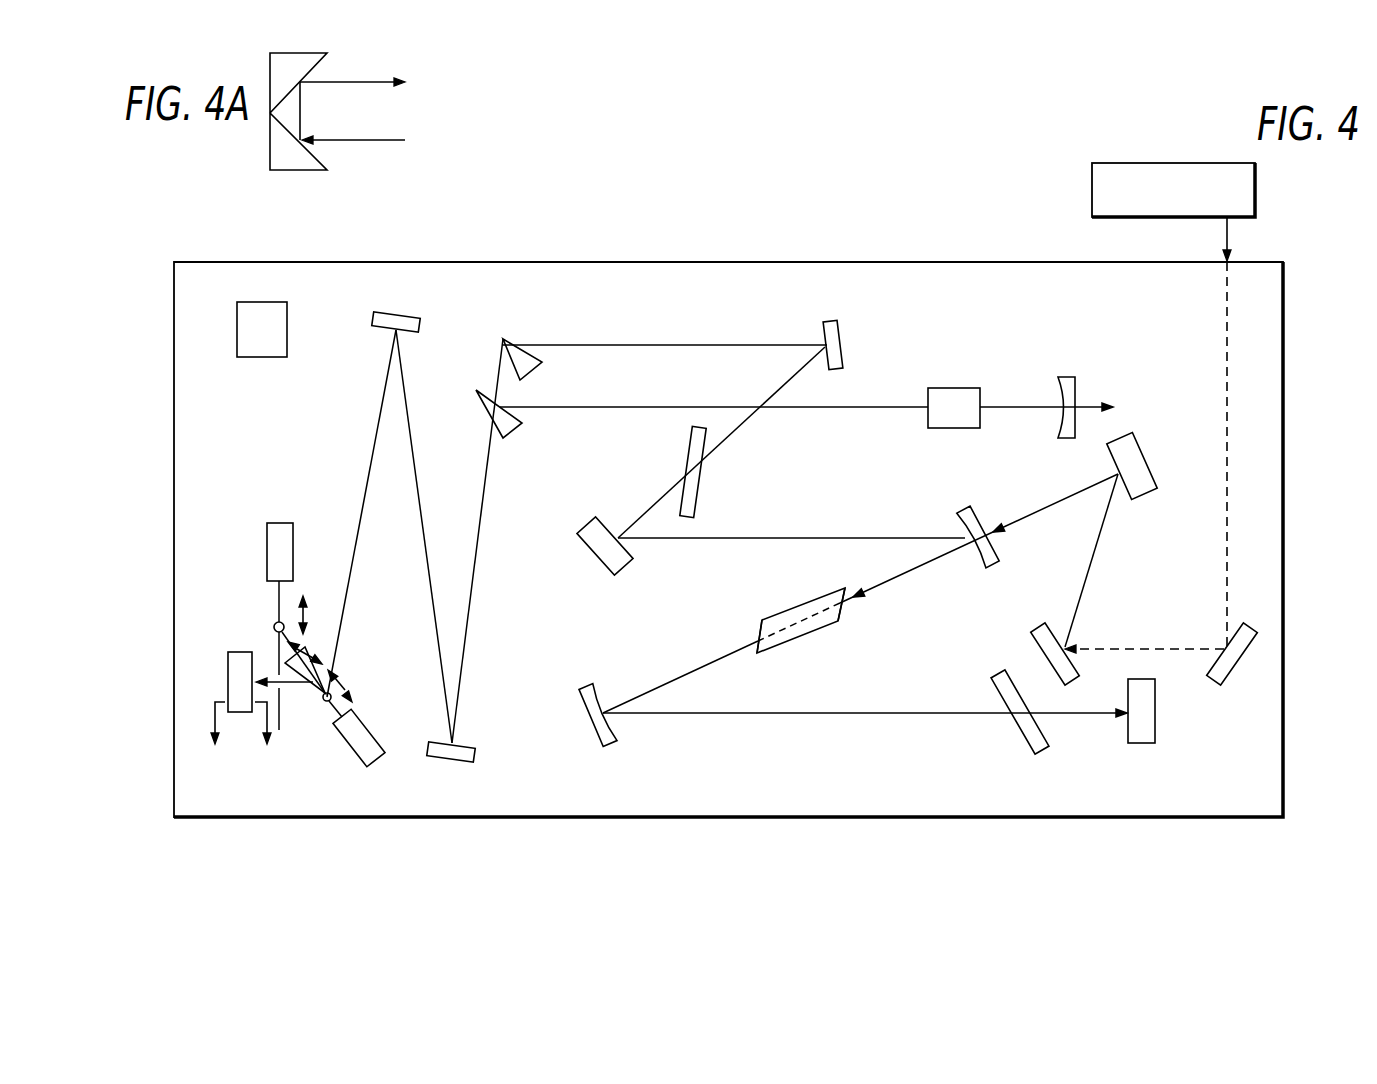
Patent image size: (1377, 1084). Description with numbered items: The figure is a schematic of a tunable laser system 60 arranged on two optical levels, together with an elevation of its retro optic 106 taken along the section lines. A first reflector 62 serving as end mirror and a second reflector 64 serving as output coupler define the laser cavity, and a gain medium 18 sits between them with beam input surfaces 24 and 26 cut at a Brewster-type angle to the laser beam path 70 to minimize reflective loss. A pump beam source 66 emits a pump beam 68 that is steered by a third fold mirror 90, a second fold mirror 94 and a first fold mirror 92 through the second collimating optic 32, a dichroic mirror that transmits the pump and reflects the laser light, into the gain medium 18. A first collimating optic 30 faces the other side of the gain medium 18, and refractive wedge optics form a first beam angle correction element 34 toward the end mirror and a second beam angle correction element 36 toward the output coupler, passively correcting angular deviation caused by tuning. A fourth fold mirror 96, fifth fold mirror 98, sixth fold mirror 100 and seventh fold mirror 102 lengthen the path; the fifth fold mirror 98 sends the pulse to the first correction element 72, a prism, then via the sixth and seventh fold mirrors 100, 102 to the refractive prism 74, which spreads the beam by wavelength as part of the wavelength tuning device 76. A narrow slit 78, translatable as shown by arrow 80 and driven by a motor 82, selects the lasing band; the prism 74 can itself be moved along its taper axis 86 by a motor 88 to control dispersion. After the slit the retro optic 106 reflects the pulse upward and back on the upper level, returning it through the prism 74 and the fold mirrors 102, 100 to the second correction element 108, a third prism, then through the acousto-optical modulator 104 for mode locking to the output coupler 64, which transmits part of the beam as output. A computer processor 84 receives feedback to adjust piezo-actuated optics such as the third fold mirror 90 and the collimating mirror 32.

In FIG. 4, the gain medium 18 is at (772, 652).
In FIG. 4, the beam input surface 24 is at (840, 605).
In FIG. 4, the beam input surface 26 is at (760, 628).
In FIG. 4, the first collimating optic 30 is at (584, 722).
In FIG. 4, the second collimating optic 32 is at (967, 512).
In FIG. 4, the first beam angle correction element 34 is at (1025, 732).
In FIG. 4, the second beam angle correction element 36 is at (703, 472).
In FIG. 4, the tunable laser system 60 is at (770, 235).
In FIG. 4, the first reflector 62 is at (1142, 743).
In FIG. 4, the second reflector 64 is at (1065, 377).
In FIG. 4, the pump beam source 66 is at (1157, 163).
In FIG. 4, the pump beam 68 is at (1227, 340).
In FIG. 4A, the laser beam path 70 is at (370, 141).
In FIG. 4, the laser beam path 70 is at (432, 582).
In FIG. 4, the first correction element 72 is at (525, 372).
In FIG. 4, the refractive prism 74 is at (312, 690).
In FIG. 4, the wavelength tuning device 76 is at (300, 745).
In FIG. 4, the narrow slit 78 is at (265, 660).
In FIG. 4, the arrow 80 is at (310, 620).
In FIG. 4, the motor 82 is at (281, 523).
In FIG. 4, the computer processor 84 is at (262, 357).
In FIG. 4, the taper axis 86 is at (316, 652).
In FIG. 4, the motor 88 is at (378, 762).
In FIG. 4, the third fold mirror 90 is at (1225, 680).
In FIG. 4, the first fold mirror 92 is at (1137, 443).
In FIG. 4, the second fold mirror 94 is at (1038, 634).
In FIG. 4, the fourth fold mirror 96 is at (582, 548).
In FIG. 4, the fifth fold mirror 98 is at (842, 347).
In FIG. 4, the sixth fold mirror 100 is at (445, 760).
In FIG. 4, the seventh fold mirror 102 is at (393, 312).
In FIG. 4, the acousto-optical modulator 104 is at (968, 388).
In FIG. 4A, the retro optic 106 is at (310, 172).
In FIG. 4, the retro optic 106 is at (228, 682).
In FIG. 4, the second correction element 108 is at (506, 430).